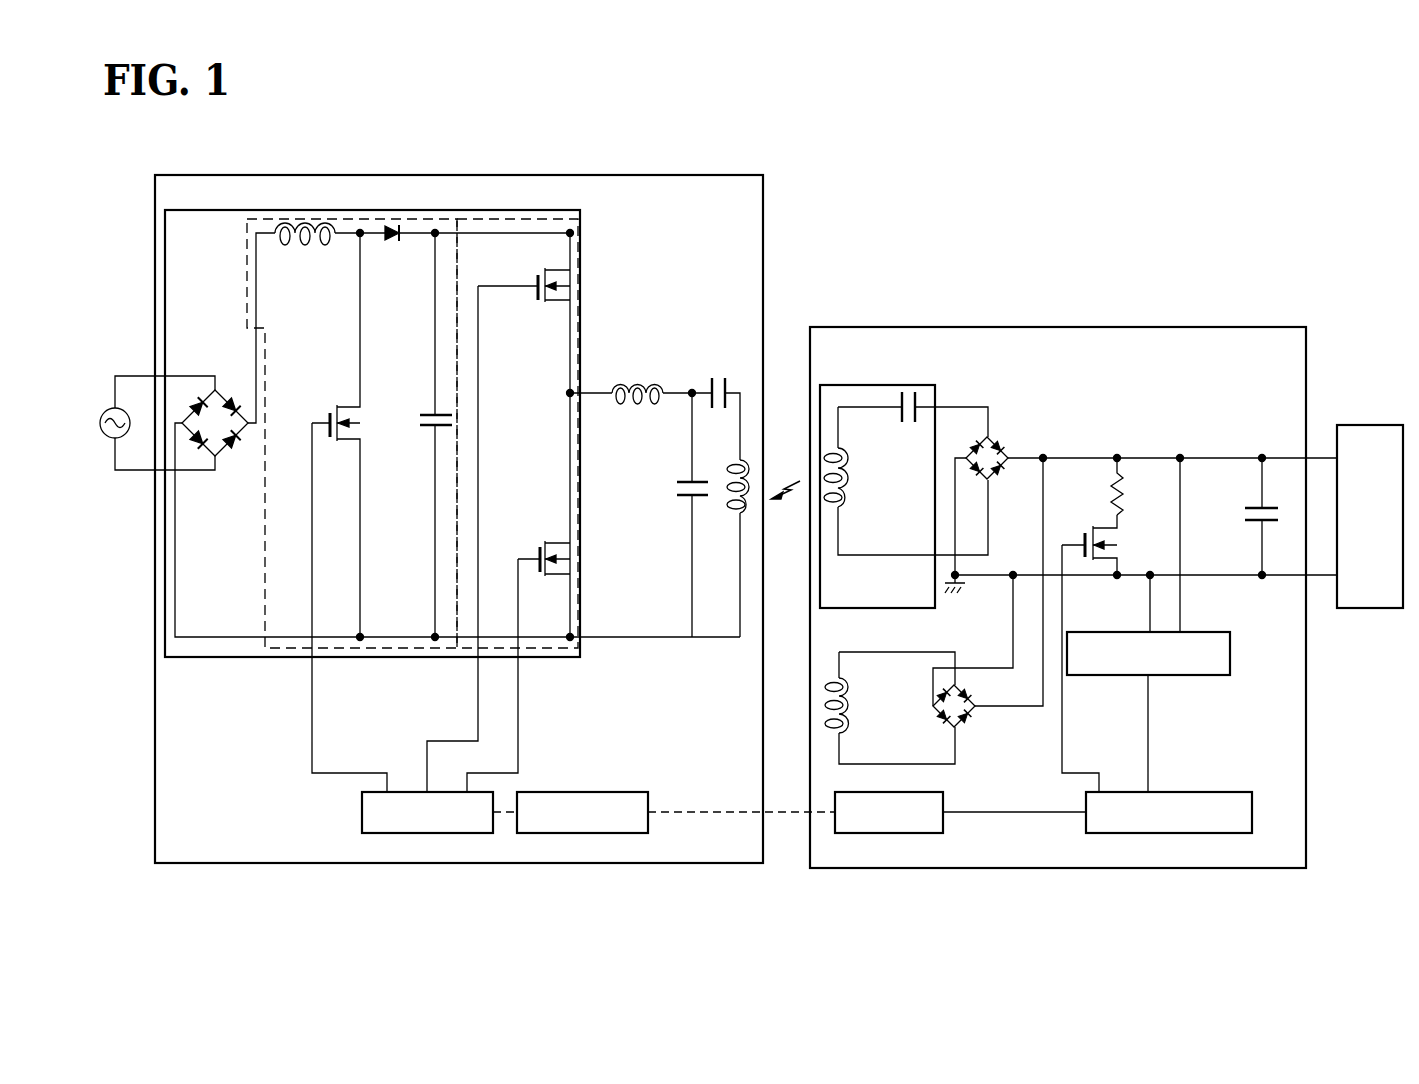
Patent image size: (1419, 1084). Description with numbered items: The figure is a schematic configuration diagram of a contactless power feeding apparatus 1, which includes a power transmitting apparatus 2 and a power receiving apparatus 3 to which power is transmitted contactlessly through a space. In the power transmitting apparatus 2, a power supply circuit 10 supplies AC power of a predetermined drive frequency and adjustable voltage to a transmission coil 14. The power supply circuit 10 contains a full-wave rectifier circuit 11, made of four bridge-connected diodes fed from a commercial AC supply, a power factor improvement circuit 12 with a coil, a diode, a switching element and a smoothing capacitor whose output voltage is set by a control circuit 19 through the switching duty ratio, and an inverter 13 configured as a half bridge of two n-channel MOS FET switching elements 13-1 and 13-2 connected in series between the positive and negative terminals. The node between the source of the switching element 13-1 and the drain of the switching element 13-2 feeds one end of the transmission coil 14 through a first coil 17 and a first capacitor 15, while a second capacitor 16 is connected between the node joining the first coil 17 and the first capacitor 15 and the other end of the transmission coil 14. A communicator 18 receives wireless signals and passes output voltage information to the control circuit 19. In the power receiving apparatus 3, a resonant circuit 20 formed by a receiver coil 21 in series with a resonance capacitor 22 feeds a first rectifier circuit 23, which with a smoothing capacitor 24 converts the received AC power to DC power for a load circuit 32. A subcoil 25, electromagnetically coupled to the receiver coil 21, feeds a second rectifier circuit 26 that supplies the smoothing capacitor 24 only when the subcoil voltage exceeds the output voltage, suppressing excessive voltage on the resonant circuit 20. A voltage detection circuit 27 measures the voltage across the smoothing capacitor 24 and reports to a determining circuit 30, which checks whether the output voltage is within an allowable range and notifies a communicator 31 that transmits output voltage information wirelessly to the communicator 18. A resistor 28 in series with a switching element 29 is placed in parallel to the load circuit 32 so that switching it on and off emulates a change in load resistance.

The contactless power feeding apparatus 1 is at (1226, 300).
The power transmitting apparatus 2 is at (712, 866).
The power receiving apparatus 3 is at (1286, 870).
The power supply circuit 10 is at (562, 209).
The full-wave rectifier circuit 11 is at (235, 464).
The power factor improvement circuit 12 is at (393, 649).
The inverter 13 is at (549, 650).
The switching element 13-1 is at (540, 268).
The switching element 13-2 is at (553, 540).
The transmission coil 14 is at (730, 502).
The first capacitor 15 is at (720, 370).
The second capacitor 16 is at (680, 503).
The first coil 17 is at (634, 372).
The communicator 18 is at (583, 838).
The control circuit 19 is at (427, 838).
The resonant circuit 20 is at (938, 609).
The receiver coil 21 is at (853, 483).
The resonance capacitor 22 is at (906, 425).
The first rectifier circuit 23 is at (1006, 440).
The smoothing capacitor 24 is at (1250, 508).
The subcoil 25 is at (852, 706).
The second rectifier circuit 26 is at (973, 728).
The voltage detection circuit 27 is at (1197, 677).
The resistor 28 is at (1128, 488).
The switching element 29 is at (1125, 545).
The determining circuit 30 is at (1142, 838).
The communicator 31 is at (903, 838).
The load circuit 32 is at (1362, 612).